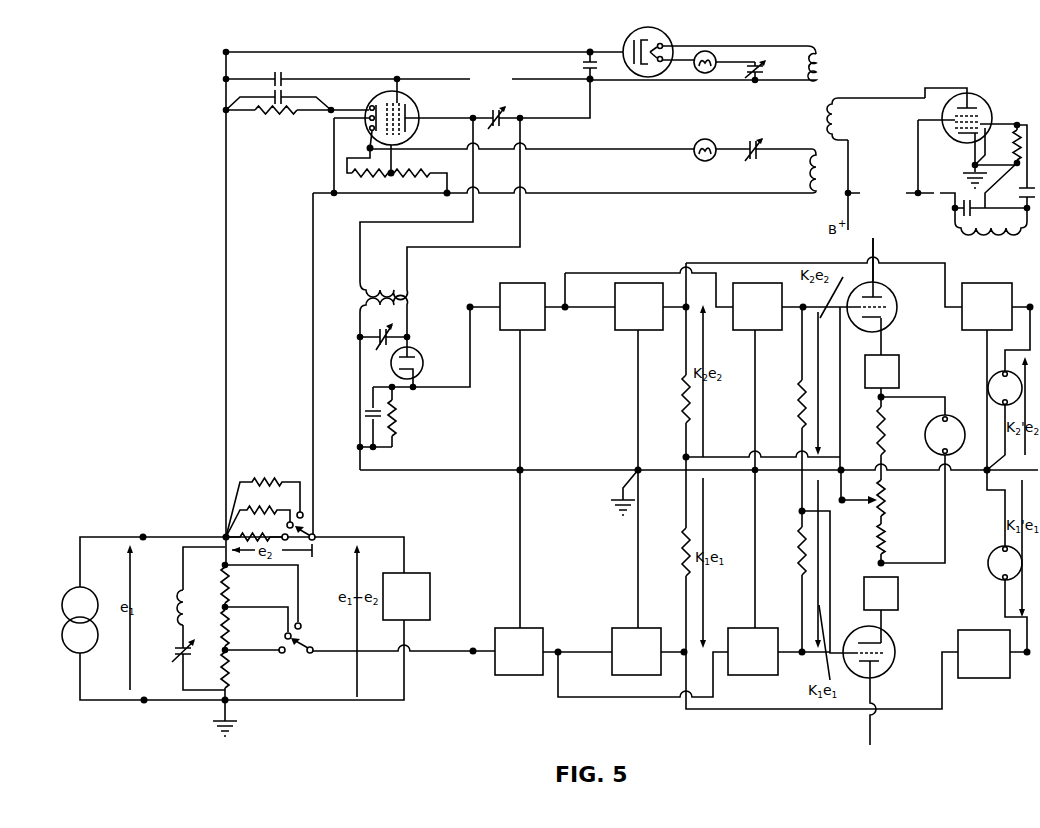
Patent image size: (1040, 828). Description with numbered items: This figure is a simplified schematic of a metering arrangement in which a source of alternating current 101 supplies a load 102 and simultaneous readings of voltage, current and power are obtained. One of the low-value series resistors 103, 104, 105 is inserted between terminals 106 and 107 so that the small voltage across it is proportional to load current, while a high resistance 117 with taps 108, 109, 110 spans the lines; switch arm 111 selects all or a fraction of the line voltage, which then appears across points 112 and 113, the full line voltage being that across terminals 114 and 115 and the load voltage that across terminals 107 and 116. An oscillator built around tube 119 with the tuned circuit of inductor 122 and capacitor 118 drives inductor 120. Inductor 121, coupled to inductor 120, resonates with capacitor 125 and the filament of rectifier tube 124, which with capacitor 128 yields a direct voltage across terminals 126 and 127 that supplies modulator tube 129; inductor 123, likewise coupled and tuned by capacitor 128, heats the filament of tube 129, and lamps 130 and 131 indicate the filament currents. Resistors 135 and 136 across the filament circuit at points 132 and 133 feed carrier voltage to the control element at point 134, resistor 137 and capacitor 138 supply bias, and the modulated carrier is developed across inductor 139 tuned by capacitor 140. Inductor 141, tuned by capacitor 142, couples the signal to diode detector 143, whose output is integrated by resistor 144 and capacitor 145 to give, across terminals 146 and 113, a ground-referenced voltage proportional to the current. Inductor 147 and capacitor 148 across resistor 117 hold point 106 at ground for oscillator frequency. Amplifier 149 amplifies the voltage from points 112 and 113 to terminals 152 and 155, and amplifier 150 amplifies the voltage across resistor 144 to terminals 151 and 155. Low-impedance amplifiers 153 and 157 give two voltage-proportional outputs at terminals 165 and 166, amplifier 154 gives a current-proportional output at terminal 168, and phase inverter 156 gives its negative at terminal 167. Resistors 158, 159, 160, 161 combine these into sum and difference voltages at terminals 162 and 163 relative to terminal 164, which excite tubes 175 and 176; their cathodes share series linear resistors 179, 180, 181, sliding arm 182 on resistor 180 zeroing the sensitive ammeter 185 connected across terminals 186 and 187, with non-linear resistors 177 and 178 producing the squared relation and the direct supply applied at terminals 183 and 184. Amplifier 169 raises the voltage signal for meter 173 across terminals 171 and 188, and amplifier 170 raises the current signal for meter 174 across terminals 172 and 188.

The source of alternating current 101 is at (110, 588).
The load 102 is at (432, 596).
The series resistor 103 is at (248, 535).
The series resistor 104 is at (258, 508).
The series resistor 105 is at (254, 481).
The terminal 106 is at (223, 535).
The terminal 107 is at (315, 533).
The tap 108 is at (300, 622).
The tap 109 is at (285, 634).
The tap 110 is at (280, 654).
The switch arm 111 is at (318, 645).
The point 112 is at (471, 656).
The point 113 is at (523, 468).
The terminal 114 is at (142, 703).
The terminal 115 is at (146, 534).
The terminal 116 is at (230, 703).
The high resistance 117 is at (222, 672).
The capacitor 118 is at (958, 213).
The tube 119 is at (988, 102).
The inductor 120 is at (828, 121).
The inductor 121 is at (819, 51).
The inductor 122 is at (1000, 238).
The inductor 123 is at (809, 183).
The rectifier tube 124 is at (660, 32).
The capacitor 125 is at (763, 71).
The terminal 126 is at (594, 82).
The terminal 127 is at (588, 50).
The capacitor 128 is at (583, 66).
The tube 129 is at (417, 107).
The incandescent lamp 130 is at (694, 147).
The incandescent lamp 131 is at (717, 63).
The point 132 is at (367, 147).
The point 133 is at (445, 196).
The point 134 is at (394, 172).
The resistor 135 is at (412, 174).
The resistor 136 is at (362, 174).
The resistor 137 is at (275, 114).
The capacitor 138 is at (284, 97).
The inductor 139 is at (381, 286).
The capacitor 140 is at (503, 111).
The inductor 141 is at (408, 309).
The capacitor 142 is at (383, 341).
The diode detector 143 is at (424, 358).
The resistor 144 is at (400, 420).
The capacitor 145 is at (364, 415).
The terminal 146 is at (470, 303).
The inductor 147 is at (177, 594).
The capacitor 148 is at (174, 648).
The amplifier 149 is at (512, 676).
The amplifier 150 is at (538, 332).
The terminal 151 is at (566, 311).
The terminal 152 is at (560, 649).
The amplifier 153 is at (612, 660).
The amplifier 154 is at (651, 332).
The terminal 155 is at (635, 467).
The amplifier 156 is at (759, 333).
The amplifier 157 is at (748, 677).
The resistor 158 is at (683, 543).
The resistor 159 is at (682, 402).
The resistor 160 is at (799, 398).
The resistor 161 is at (797, 546).
The terminal 162 is at (683, 457).
The terminal 163 is at (799, 512).
The terminal 164 is at (843, 468).
The terminal 165 is at (686, 656).
The terminal 166 is at (803, 656).
The terminal 167 is at (807, 301).
The terminal 168 is at (688, 305).
The amplifier 169 is at (984, 673).
The amplifier 170 is at (974, 284).
The terminal 171 is at (1026, 660).
The terminal 172 is at (1029, 302).
The meter 173 is at (995, 552).
The meter 174 is at (994, 378).
The tube 175 is at (893, 298).
The tube 176 is at (883, 675).
The non-linear resistor 177 is at (899, 593).
The non-linear resistor 178 is at (900, 365).
The linear resistor 179 is at (886, 426).
The linear resistor 180 is at (886, 497).
The linear resistor 181 is at (888, 546).
The sliding arm 182 is at (845, 505).
The terminal 183 is at (878, 731).
The terminal 184 is at (875, 253).
The sensitive D.-C. ammeter 185 is at (948, 417).
The terminal 186 is at (877, 565).
The terminal 187 is at (878, 399).
The terminal 188 is at (985, 474).